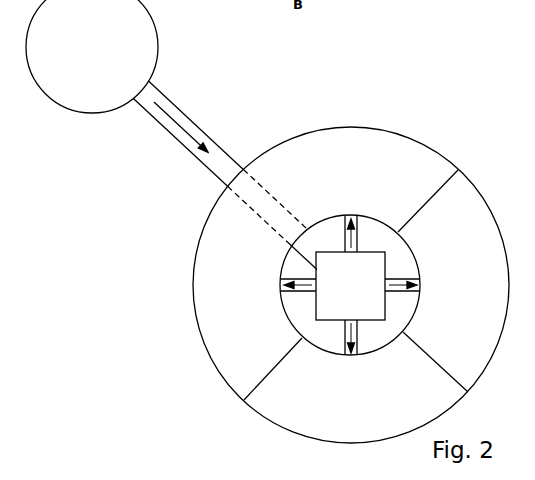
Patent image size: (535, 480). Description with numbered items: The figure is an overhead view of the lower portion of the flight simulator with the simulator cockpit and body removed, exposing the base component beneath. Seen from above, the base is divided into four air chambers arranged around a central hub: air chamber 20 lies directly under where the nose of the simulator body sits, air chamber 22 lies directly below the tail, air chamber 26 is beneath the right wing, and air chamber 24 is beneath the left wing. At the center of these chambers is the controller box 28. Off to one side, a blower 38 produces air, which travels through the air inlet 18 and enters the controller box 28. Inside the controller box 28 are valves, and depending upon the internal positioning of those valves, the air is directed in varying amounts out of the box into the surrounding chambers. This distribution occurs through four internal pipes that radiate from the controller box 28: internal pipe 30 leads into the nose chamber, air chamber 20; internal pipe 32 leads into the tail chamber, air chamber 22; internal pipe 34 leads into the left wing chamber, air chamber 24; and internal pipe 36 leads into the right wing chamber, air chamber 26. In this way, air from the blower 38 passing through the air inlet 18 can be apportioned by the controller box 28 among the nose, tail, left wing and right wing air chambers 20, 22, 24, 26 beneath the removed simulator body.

The air inlet 18 is at (162, 142).
The air chamber 20 is at (387, 200).
The air chamber 22 is at (302, 377).
The air chamber 24 is at (236, 291).
The air chamber 26 is at (442, 329).
The controller box 28 is at (350, 286).
The internal pipe 30 is at (343, 222).
The internal pipe 32 is at (343, 324).
The internal pipe 34 is at (312, 295).
The internal pipe 36 is at (390, 277).
The blower 38 is at (92, 56).